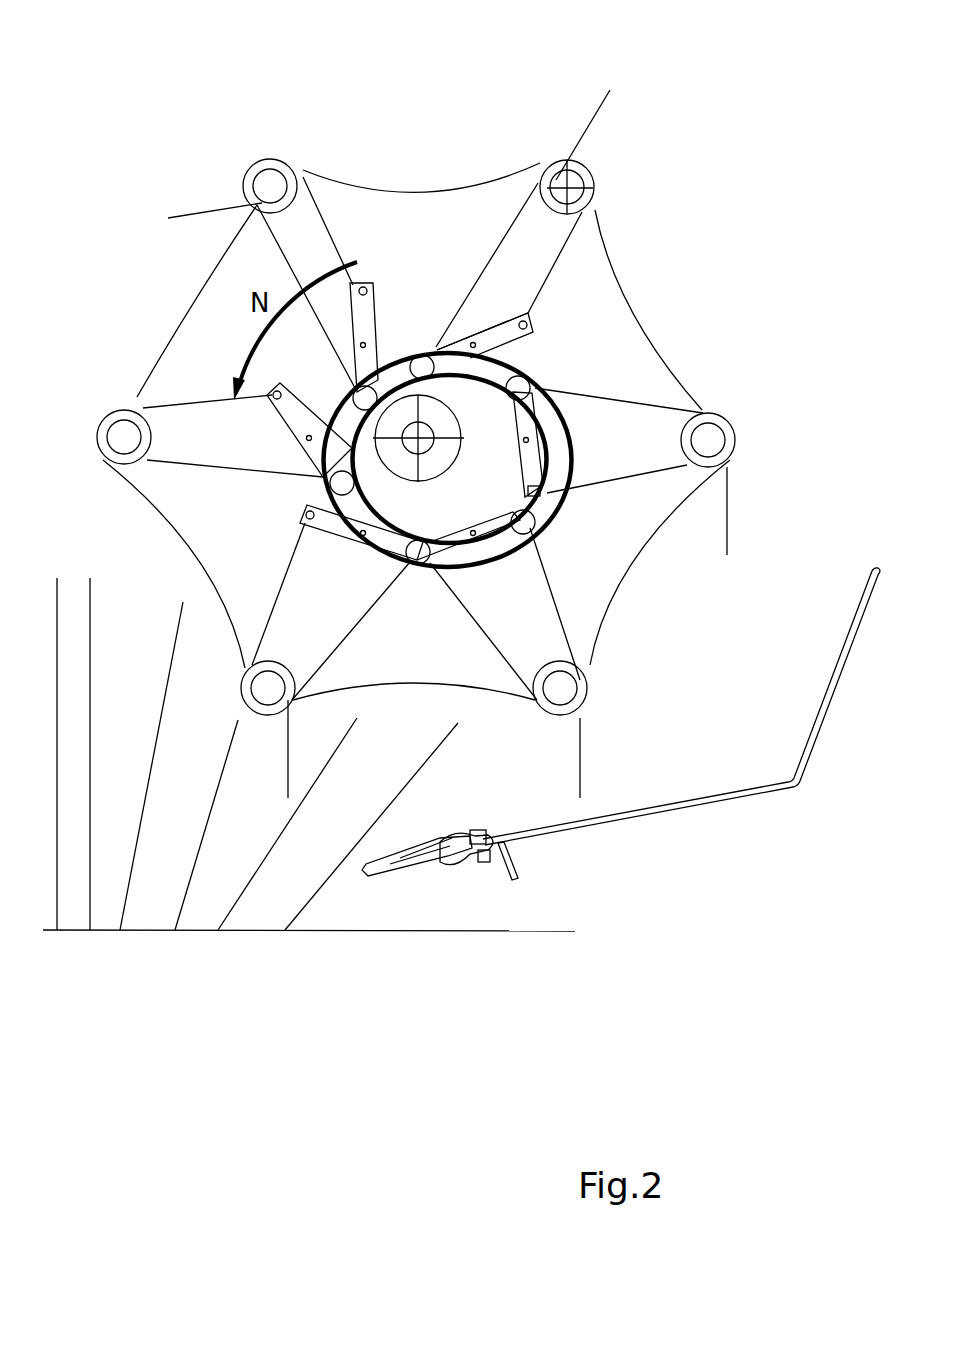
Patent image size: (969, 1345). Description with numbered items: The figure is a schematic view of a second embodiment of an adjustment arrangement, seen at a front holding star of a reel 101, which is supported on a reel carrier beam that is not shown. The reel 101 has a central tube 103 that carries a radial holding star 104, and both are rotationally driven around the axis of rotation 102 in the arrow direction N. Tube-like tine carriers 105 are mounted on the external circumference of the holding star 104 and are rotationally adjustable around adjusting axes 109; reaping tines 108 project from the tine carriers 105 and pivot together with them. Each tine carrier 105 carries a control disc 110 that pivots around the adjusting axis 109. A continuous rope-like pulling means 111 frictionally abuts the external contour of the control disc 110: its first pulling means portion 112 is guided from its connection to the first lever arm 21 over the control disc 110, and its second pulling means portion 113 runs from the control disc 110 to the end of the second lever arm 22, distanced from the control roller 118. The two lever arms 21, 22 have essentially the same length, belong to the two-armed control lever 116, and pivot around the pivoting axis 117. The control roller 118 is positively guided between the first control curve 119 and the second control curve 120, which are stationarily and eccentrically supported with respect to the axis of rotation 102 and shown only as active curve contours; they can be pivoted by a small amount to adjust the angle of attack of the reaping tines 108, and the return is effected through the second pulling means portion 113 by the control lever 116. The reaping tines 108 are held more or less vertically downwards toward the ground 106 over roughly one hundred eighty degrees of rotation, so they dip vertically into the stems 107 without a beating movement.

The reel 101 is at (470, 100).
The axis of rotation 102 is at (420, 437).
The central tube 103 is at (442, 463).
The holding star 104 is at (416, 431).
The tine carrier 105 is at (570, 177).
The ground 106 is at (430, 930).
The stems 107 is at (289, 766).
The reaping tines 108 is at (600, 108).
The adjusting axis 109 is at (584, 193).
The control disc 110 is at (590, 220).
The pulling means 111 is at (493, 255).
The first pulling means portion 112 is at (522, 207).
The second pulling means portion 113 is at (553, 273).
The control lever 116 is at (493, 323).
The pivoting axis 117 is at (472, 343).
The control roller 118 is at (420, 364).
The first control curve 119 is at (338, 417).
The second control curve 120 is at (363, 461).
The first lever arm 21 is at (435, 348).
The second lever arm 22 is at (512, 337).